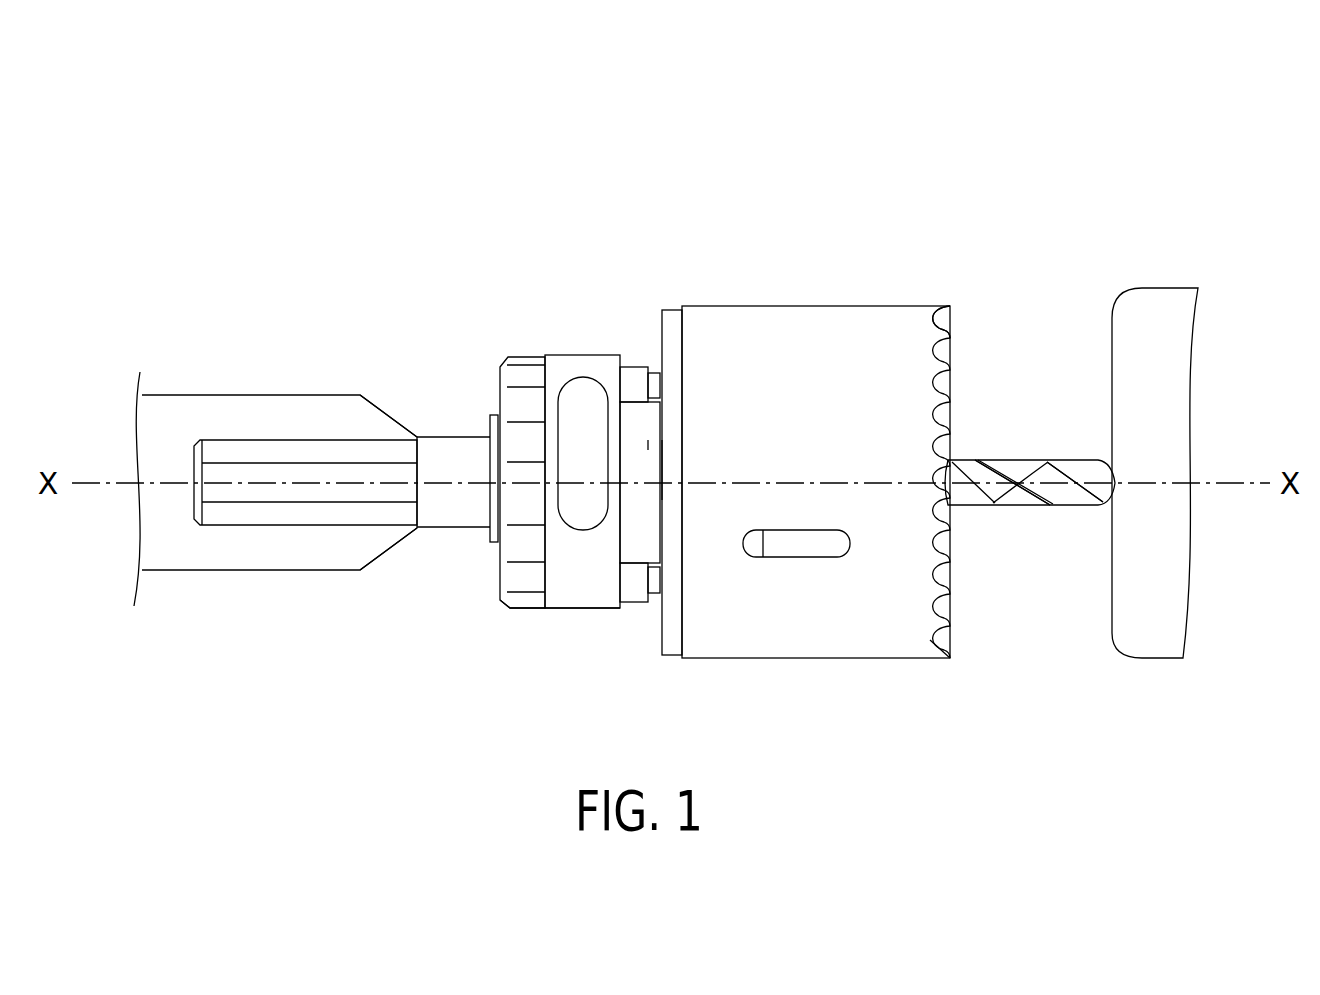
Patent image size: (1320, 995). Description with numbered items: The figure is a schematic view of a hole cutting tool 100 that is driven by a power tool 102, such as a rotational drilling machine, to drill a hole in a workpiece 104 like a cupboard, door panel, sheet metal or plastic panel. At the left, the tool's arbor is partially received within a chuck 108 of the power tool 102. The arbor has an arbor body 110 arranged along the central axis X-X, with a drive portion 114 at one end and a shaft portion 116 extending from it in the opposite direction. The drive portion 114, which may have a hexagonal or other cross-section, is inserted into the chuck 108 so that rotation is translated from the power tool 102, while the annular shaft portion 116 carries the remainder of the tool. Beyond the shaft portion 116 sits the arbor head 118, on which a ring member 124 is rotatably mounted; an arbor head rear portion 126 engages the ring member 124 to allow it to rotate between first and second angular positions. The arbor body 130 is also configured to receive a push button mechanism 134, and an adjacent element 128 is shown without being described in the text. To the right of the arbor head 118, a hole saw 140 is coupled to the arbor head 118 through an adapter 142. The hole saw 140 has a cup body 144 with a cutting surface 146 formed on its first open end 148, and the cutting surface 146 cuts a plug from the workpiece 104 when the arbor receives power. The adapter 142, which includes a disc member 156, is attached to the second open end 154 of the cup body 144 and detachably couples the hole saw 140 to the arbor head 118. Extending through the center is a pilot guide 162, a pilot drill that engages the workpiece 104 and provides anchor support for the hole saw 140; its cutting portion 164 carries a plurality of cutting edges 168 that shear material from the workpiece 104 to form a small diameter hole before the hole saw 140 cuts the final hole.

The hole cutting tool 100 is at (1095, 160).
The power tool 102 is at (177, 377).
The workpiece 104 is at (1176, 461).
The chuck 108 is at (440, 420).
The arbor body 110 is at (429, 532).
The drive portion 114 is at (238, 525).
The shaft portion 116 is at (487, 537).
The arbor head 118 is at (563, 343).
The ring member 124 is at (502, 617).
The arbor head rear portion 126 is at (530, 350).
The threaded nut 128 is at (628, 350).
The arbor body 130 is at (616, 607).
The push button mechanism 134 is at (585, 517).
The hole saw 140 is at (952, 662).
The adapter 142 is at (648, 445).
The cup body 144 is at (912, 640).
The cutting surface 146 is at (952, 337).
The first open end 148 is at (927, 303).
The second open end 154 is at (684, 659).
The disc member 156 is at (662, 472).
The pilot guide 162 is at (1017, 522).
The cutting portion 164 is at (990, 458).
The cutting edges 168 is at (1057, 460).